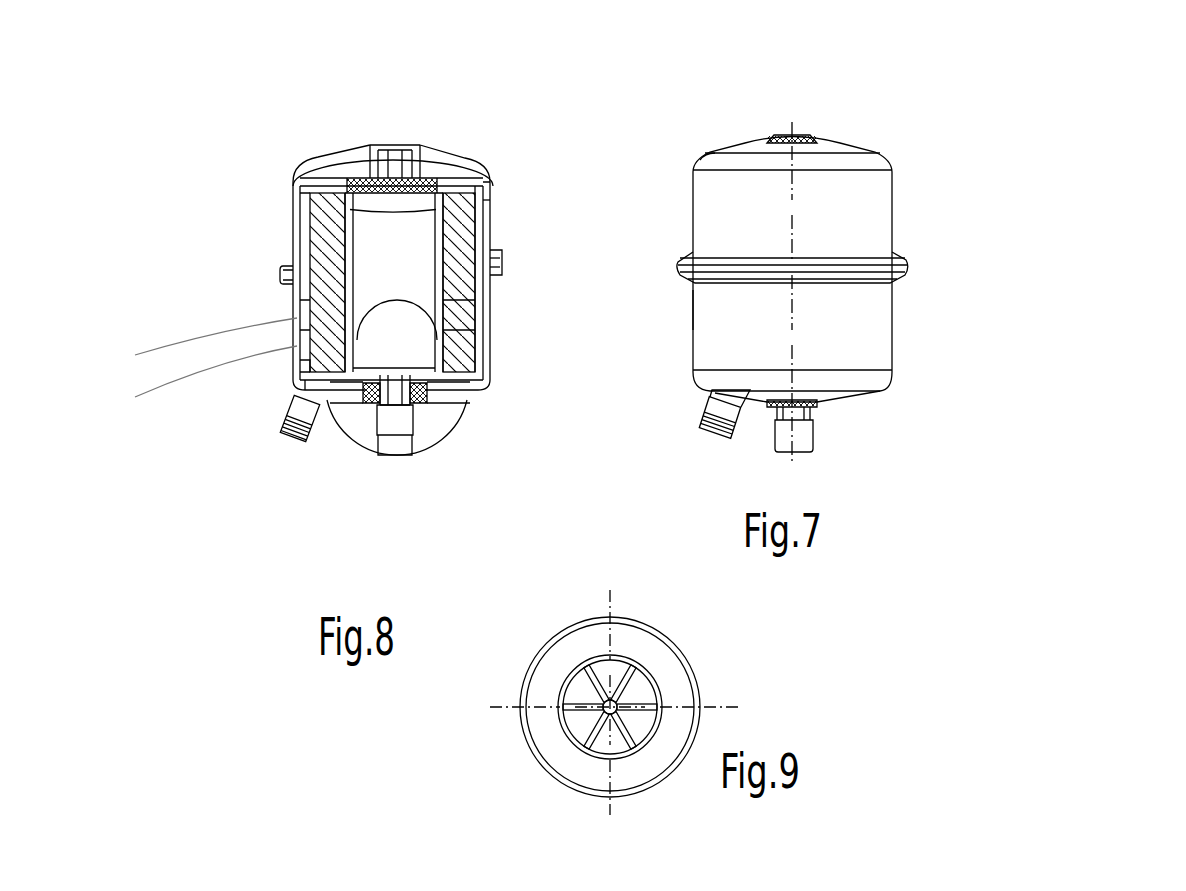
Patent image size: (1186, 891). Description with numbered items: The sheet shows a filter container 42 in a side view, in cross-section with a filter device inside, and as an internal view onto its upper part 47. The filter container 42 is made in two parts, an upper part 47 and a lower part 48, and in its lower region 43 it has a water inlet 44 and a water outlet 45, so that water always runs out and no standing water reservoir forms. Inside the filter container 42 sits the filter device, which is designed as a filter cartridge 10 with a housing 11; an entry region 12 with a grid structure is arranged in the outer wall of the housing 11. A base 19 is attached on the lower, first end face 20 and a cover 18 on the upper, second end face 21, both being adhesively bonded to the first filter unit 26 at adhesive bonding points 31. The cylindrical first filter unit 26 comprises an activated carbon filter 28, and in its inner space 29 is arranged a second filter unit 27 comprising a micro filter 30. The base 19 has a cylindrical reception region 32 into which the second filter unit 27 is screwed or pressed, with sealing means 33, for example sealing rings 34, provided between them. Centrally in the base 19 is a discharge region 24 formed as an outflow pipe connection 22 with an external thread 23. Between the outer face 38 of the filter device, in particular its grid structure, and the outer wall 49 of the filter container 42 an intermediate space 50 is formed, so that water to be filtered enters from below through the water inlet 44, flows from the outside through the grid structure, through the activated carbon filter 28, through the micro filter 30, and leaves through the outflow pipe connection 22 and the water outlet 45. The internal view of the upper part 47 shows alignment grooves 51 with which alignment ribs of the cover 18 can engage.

In FIG. 8, the filter cartridge 10 is at (295, 228).
In FIG. 8, the housing 11 is at (297, 331).
In FIG. 8, the entry region 12 is at (293, 350).
In FIG. 8, the cover 18 is at (323, 160).
In FIG. 8, the base 19 is at (327, 417).
In FIG. 8, the first end face 20 is at (450, 400).
In FIG. 8, the second end face 21 is at (446, 162).
In FIG. 8, the outflow pipe connection 22 is at (432, 400).
In FIG. 8, the external thread 23 is at (343, 413).
In FIG. 8, the discharge region 24 is at (362, 417).
In FIG. 8, the first filter unit 26 is at (493, 230).
In FIG. 8, the second filter unit 27 is at (293, 208).
In FIG. 8, the activated carbon filter 28 is at (293, 235).
In FIG. 8, the inner space 29 is at (343, 183).
In FIG. 8, the micro filter 30 is at (493, 195).
In FIG. 8, the adhesive bonding points 31 is at (467, 160).
In FIG. 8, the reception region 32 is at (293, 387).
In FIG. 8, the sealing means 33 is at (465, 305).
In FIG. 8, the sealing rings 34 is at (470, 320).
In FIG. 8, the outer face 38 is at (493, 240).
In FIG. 8, the filter container 42 is at (294, 168).
In FIG. 7, the filter container 42 is at (850, 138).
In FIG. 9, the filter container 42 is at (523, 732).
In FIG. 8, the lower region 43 is at (500, 410).
In FIG. 7, the lower region 43 is at (880, 400).
In FIG. 8, the water inlet 44 is at (293, 407).
In FIG. 7, the water inlet 44 is at (712, 402).
In FIG. 8, the water outlet 45 is at (413, 457).
In FIG. 7, the water outlet 45 is at (817, 435).
In FIG. 8, the upper part 47 is at (294, 178).
In FIG. 7, the upper part 47 is at (728, 138).
In FIG. 9, the upper part 47 is at (580, 622).
In FIG. 8, the lower part 48 is at (297, 307).
In FIG. 7, the lower part 48 is at (692, 300).
In FIG. 8, the outer wall 49 is at (493, 247).
In FIG. 7, the outer wall 49 is at (895, 208).
In FIG. 8, the intermediate space 50 is at (493, 255).
In FIG. 9, the alignment grooves 51 is at (627, 683).